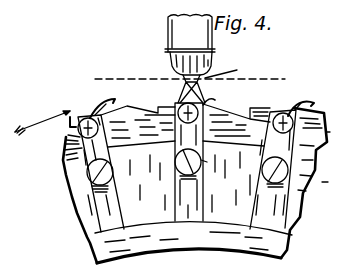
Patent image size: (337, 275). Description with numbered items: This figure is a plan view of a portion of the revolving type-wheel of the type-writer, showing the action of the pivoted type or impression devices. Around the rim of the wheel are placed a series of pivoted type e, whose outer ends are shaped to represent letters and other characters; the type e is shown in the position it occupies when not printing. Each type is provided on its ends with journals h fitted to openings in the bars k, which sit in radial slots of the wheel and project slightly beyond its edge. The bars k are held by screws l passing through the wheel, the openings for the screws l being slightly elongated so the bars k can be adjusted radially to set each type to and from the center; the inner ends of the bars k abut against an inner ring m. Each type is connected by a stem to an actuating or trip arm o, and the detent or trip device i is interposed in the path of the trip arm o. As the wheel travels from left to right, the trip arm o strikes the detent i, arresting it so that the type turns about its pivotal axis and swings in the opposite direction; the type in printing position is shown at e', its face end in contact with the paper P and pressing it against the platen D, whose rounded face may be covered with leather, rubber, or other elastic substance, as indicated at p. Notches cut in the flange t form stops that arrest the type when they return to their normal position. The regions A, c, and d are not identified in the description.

The platen D is at (190, 45).
The paper P is at (190, 68).
The elastic facing of the platen p is at (214, 59).
The detent or trip device i is at (222, 69).
The type in printing position e' is at (181, 89).
The pivoted type e is at (190, 101).
The actuating or trip arm o is at (209, 102).
The flange t is at (185, 123).
The journals h is at (193, 124).
The bars k is at (187, 167).
The screws l is at (205, 163).
The wheel body A is at (186, 176).
The inner ring m is at (193, 242).
The side piece c is at (331, 135).
The side piece d is at (329, 185).